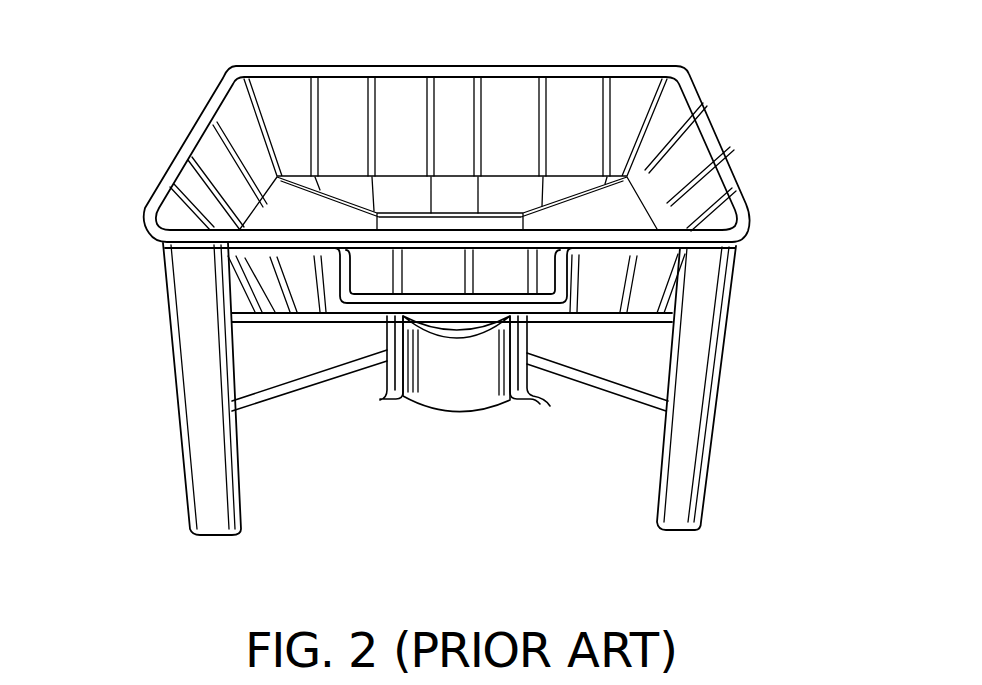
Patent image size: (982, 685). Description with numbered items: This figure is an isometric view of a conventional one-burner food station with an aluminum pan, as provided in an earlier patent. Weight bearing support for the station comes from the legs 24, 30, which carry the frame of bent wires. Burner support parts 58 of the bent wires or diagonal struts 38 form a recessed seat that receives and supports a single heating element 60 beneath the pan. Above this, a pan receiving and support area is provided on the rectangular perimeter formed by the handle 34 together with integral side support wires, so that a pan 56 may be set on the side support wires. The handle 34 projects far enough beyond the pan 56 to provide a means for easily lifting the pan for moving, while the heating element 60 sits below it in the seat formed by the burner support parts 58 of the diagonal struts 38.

The pan 56 is at (450, 103).
The handle 34 is at (332, 318).
The leg 24 is at (199, 431).
The leg 30 is at (700, 432).
The diagonal strut 38 is at (263, 410).
The burner support part 58 is at (376, 384).
The heating element 60 is at (452, 388).